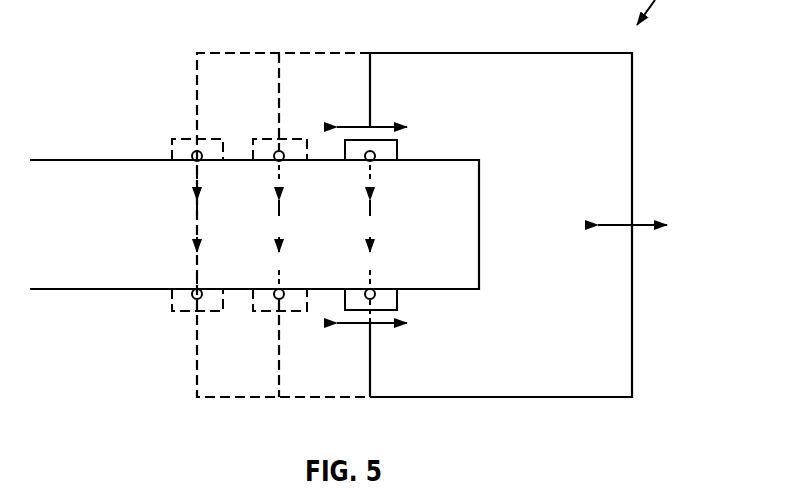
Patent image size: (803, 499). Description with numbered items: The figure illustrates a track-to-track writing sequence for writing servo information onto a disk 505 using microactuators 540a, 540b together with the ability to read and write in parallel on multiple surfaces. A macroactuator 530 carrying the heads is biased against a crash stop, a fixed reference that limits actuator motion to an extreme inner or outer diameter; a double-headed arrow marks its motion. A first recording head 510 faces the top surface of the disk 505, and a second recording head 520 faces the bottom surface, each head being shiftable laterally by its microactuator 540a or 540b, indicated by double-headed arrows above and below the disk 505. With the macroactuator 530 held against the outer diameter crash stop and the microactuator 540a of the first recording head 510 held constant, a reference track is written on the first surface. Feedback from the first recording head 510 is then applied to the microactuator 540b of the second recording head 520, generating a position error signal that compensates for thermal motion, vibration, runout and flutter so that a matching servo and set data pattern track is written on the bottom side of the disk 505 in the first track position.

The disk 505 is at (467, 205).
The first recording head 510 is at (343, 147).
The second recording head 520 is at (345, 300).
The macroactuator 530 is at (632, 138).
The microactuator 540a is at (373, 126).
The microactuator 540b is at (373, 325).